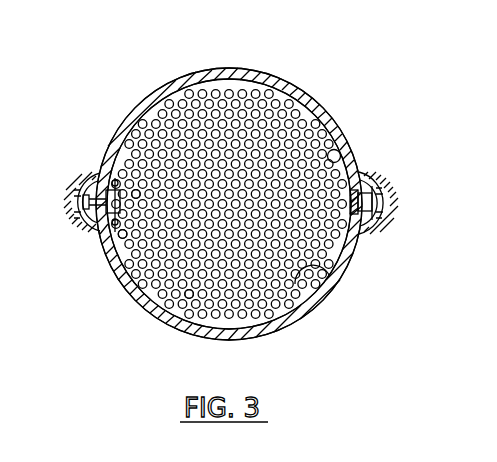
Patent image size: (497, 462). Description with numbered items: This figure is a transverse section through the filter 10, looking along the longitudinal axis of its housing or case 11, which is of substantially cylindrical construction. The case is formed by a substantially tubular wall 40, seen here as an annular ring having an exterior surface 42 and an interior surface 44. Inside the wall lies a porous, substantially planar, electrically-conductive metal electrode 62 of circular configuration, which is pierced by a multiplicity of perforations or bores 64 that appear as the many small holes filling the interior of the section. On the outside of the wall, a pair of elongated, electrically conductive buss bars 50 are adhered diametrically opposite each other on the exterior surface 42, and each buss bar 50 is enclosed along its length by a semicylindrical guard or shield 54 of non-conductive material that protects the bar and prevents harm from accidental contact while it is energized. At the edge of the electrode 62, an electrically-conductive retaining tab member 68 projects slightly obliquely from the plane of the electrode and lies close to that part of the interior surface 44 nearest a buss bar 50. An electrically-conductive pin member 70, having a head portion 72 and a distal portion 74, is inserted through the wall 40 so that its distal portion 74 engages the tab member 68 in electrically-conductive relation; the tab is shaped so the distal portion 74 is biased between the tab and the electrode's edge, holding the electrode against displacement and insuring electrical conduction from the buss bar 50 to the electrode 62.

The filter 10 is at (285, 55).
The housing or case 11 is at (232, 66).
The tubular wall 40 is at (178, 76).
The exterior surface 42 is at (335, 122).
The interior surface 44 is at (338, 151).
The buss bar 50 is at (78, 232).
The guard or shield 54 is at (78, 177).
The electrode 62 is at (147, 300).
The perforations or bores 64 is at (188, 299).
The retaining tab member 68 is at (114, 178).
The pin member 70 is at (127, 236).
The head portion 72 is at (83, 201).
The distal portion 74 is at (140, 192).